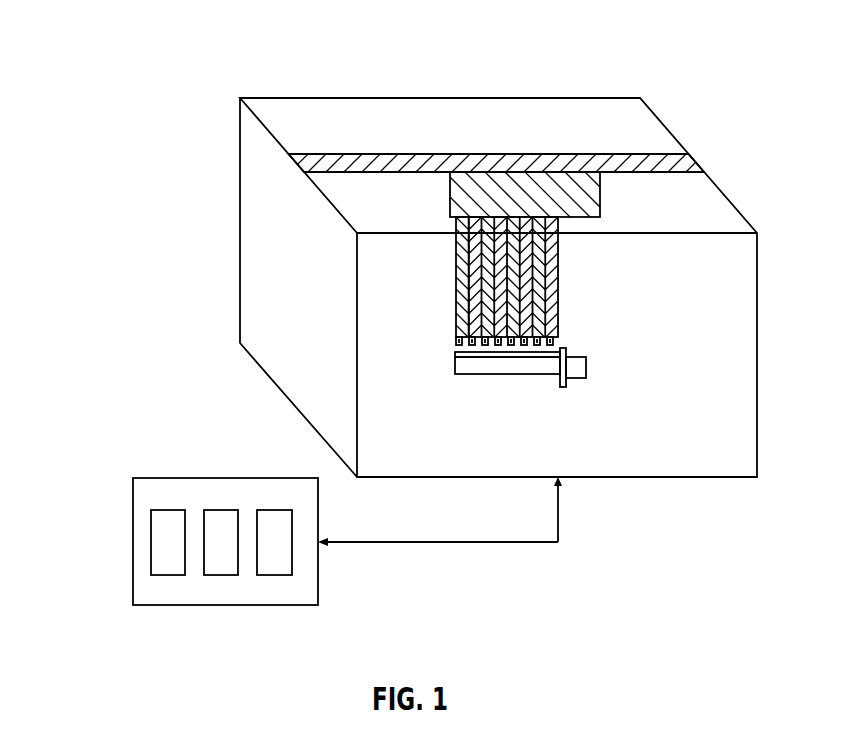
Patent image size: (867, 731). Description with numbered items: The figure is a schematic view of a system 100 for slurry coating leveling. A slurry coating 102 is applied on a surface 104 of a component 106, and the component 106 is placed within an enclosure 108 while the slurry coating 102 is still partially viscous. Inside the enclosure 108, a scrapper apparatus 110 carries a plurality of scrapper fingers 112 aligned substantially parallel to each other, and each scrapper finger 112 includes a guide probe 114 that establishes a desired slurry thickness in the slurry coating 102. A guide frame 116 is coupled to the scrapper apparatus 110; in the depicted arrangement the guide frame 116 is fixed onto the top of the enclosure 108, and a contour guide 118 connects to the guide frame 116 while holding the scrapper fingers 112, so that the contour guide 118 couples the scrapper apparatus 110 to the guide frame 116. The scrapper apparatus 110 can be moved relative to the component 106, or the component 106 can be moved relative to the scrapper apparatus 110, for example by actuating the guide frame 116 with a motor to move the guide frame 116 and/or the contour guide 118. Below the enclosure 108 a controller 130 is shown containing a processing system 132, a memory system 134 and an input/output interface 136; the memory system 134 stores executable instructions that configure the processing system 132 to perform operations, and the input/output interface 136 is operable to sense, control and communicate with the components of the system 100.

The system for slurry coating leveling 100 is at (144, 40).
The slurry coating 102 is at (455, 356).
The surface 104 is at (527, 362).
The component 106 is at (586, 367).
The enclosure 108 is at (503, 98).
The scrapper apparatus 110 is at (559, 255).
The scrapper fingers 112 is at (456, 270).
The guide probe 114 is at (456, 336).
The guide frame 116 is at (397, 170).
The contour guide 118 is at (601, 212).
The controller 130 is at (157, 607).
The processing system 132 is at (168, 510).
The memory system 134 is at (222, 510).
The input/output interface 136 is at (272, 510).